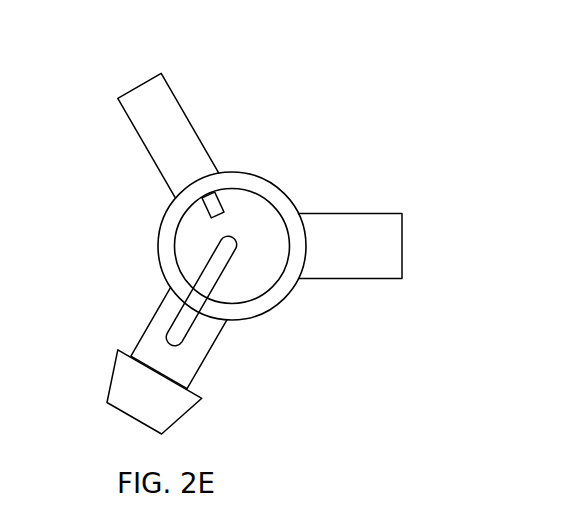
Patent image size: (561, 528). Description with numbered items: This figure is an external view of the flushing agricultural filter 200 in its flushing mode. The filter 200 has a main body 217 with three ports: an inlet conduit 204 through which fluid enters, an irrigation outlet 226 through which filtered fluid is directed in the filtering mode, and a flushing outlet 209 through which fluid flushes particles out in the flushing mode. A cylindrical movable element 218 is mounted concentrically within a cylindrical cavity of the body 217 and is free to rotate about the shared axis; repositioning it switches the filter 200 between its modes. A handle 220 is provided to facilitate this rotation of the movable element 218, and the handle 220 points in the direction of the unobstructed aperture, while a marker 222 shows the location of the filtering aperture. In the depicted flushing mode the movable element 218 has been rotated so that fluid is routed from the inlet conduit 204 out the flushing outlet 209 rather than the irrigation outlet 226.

The filter 200 is at (263, 229).
The inlet conduit 204 is at (197, 373).
The flushing outlet 209 is at (159, 100).
The main body 217 is at (282, 303).
The movable element 218 is at (197, 230).
The handle 220 is at (198, 292).
The marker 222 is at (207, 200).
The irrigation outlet 226 is at (332, 215).